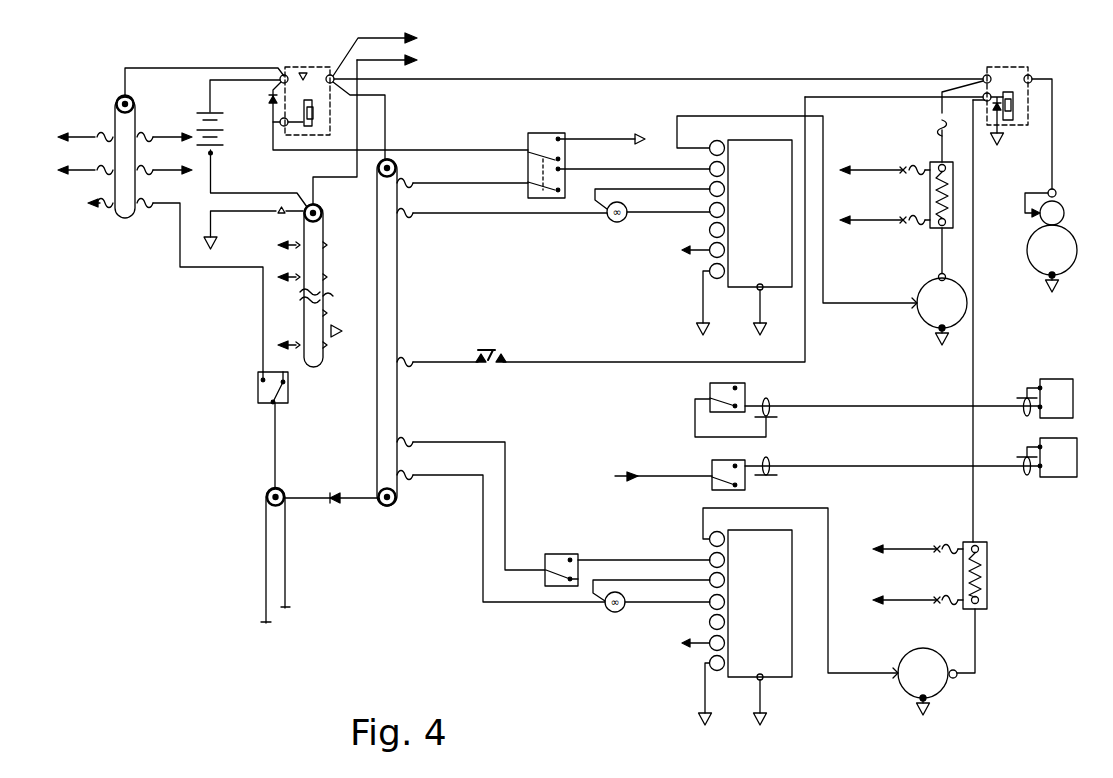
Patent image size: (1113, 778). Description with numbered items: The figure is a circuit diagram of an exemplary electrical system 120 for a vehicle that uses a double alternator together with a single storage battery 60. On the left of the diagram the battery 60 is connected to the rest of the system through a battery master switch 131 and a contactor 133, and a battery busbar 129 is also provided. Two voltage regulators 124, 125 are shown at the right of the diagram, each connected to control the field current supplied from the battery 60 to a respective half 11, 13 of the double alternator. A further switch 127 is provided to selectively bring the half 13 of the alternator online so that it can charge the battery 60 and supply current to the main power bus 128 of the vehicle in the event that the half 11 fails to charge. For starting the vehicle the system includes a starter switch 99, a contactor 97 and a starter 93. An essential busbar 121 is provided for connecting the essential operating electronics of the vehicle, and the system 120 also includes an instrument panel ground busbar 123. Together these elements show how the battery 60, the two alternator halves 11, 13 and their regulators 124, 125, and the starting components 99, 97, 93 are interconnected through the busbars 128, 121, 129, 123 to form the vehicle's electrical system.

The battery busbar 129 is at (118, 118).
The storage battery 60 is at (197, 122).
The contactor 133 is at (318, 90).
The electrical system 120 is at (516, 48).
The instrument panel ground busbar 123 is at (317, 362).
The essential busbar 121 is at (275, 560).
The main power bus 128 is at (390, 285).
The starter switch 99 is at (495, 350).
The battery master switch 131 is at (548, 133).
The voltage regulator 124 is at (775, 220).
The contactor 97 is at (997, 85).
The half of the double alternator 11 is at (952, 313).
The starter 93 is at (1070, 242).
The switch 127 is at (567, 553).
The voltage regulator 125 is at (775, 611).
The half of the double alternator 13 is at (933, 683).